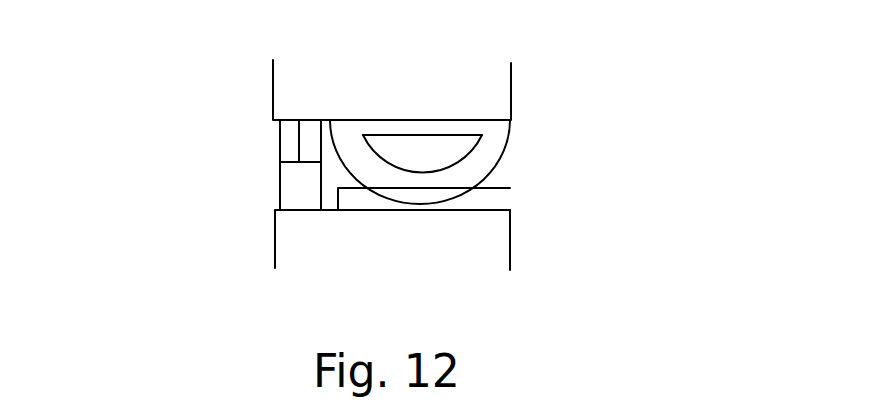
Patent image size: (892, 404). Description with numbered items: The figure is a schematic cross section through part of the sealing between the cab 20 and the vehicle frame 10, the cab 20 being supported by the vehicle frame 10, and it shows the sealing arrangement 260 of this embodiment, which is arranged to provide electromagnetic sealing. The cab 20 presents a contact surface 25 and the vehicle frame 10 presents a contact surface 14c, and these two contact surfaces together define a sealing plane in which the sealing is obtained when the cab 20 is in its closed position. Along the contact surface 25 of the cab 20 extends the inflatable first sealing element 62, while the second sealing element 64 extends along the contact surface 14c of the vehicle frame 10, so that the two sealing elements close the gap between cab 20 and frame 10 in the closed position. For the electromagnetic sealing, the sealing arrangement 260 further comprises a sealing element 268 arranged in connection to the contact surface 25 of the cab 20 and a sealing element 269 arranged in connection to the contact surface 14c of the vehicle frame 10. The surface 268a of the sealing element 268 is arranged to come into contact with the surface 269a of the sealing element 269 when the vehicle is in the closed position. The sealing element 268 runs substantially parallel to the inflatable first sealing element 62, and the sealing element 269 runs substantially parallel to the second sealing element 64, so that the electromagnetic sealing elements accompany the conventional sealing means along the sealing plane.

The vehicle frame 10 is at (262, 236).
The contact surface of the vehicle frame 14c is at (330, 210).
The cab 20 is at (525, 96).
The contact surface of the cab 25 is at (467, 120).
The first sealing element 62 is at (520, 158).
The second sealing element 64 is at (522, 203).
The sealing arrangement 260 is at (205, 169).
The sealing element 268 is at (270, 142).
The surface of the sealing element 268a is at (307, 163).
The sealing element 269 is at (268, 185).
The surface of the sealing element 269a is at (300, 160).